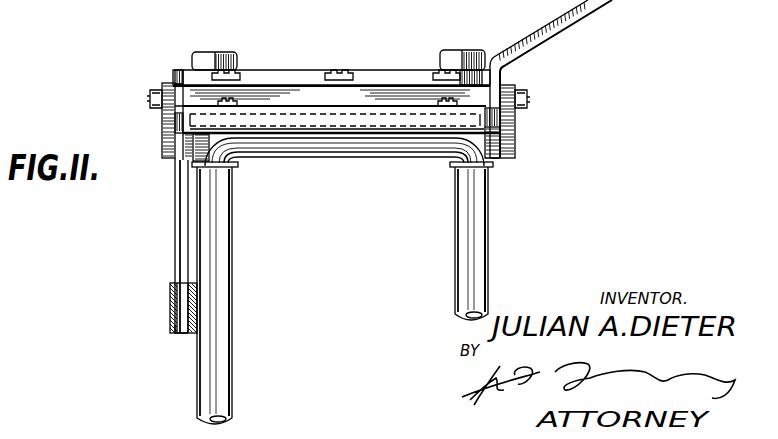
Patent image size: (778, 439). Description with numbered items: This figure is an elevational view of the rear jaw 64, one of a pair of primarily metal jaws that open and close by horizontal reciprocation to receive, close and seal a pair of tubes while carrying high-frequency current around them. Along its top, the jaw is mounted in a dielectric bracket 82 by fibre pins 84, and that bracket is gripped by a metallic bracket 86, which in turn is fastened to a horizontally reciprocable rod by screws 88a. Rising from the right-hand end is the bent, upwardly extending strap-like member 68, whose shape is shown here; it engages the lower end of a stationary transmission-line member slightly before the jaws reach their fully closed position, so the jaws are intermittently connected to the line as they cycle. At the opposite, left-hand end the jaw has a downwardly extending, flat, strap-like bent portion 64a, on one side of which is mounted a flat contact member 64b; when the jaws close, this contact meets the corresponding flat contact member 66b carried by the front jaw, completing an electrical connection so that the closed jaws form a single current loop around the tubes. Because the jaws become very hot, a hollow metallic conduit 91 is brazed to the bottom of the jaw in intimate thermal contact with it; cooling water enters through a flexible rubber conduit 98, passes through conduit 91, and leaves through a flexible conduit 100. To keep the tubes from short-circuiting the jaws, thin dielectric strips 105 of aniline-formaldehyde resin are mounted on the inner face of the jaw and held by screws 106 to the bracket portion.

The rear jaw 64 is at (302, 110).
The bent portion 64a is at (179, 212).
The flat contact member 64b is at (191, 336).
The flat contact member 66b is at (171, 308).
The bent strap-like member 68 is at (576, 22).
The dielectric bracket 82 is at (360, 92).
The fibre pins 84 is at (436, 72).
The metallic bracket 86 is at (253, 70).
The screws 88a is at (205, 57).
The hollow metallic conduit 91 is at (335, 145).
The flexible conduit 98 is at (230, 362).
The flexible conduit 100 is at (483, 230).
The dielectric strips 105 is at (380, 120).
The screws 106 is at (149, 96).